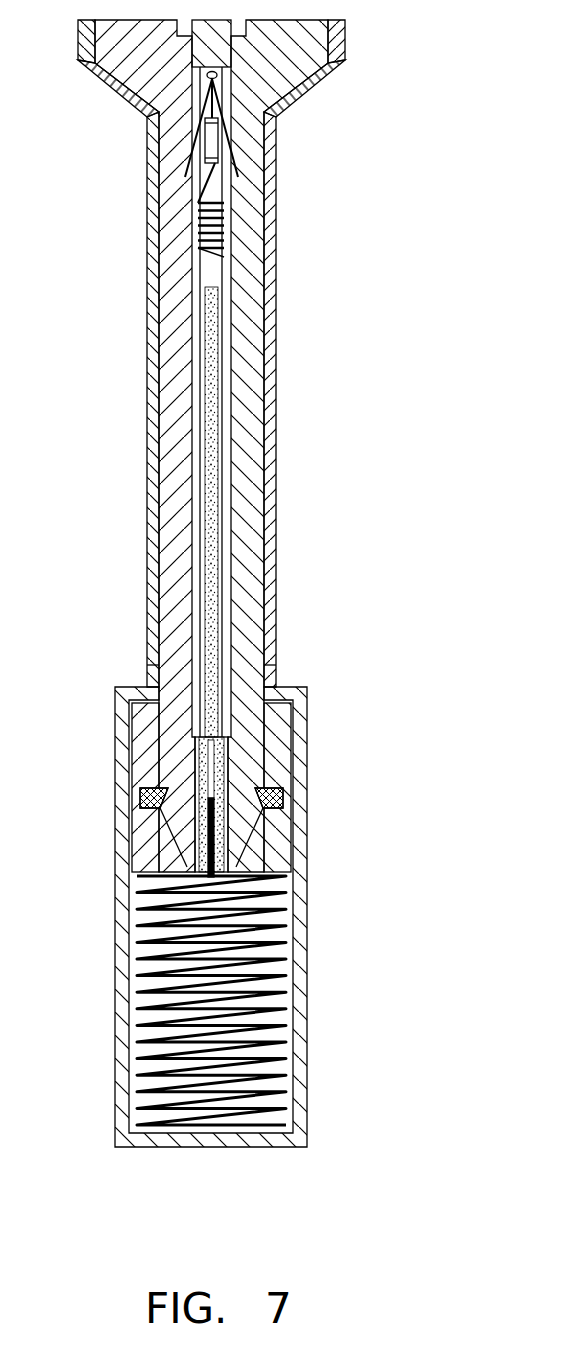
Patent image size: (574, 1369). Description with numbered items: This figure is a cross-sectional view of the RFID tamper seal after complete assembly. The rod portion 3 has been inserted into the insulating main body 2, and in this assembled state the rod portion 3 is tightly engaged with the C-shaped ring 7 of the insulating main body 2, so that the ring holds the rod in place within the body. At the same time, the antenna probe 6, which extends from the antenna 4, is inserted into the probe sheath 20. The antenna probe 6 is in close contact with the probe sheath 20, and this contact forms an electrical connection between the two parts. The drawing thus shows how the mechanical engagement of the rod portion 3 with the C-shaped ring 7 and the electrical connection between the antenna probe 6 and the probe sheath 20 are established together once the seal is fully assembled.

The insulating main body 2 is at (300, 903).
The rod portion 3 is at (268, 443).
The antenna 4 is at (145, 935).
The antenna probe 6 is at (212, 833).
The C-shaped ring 7 is at (272, 800).
The probe sheath 20 is at (212, 763).